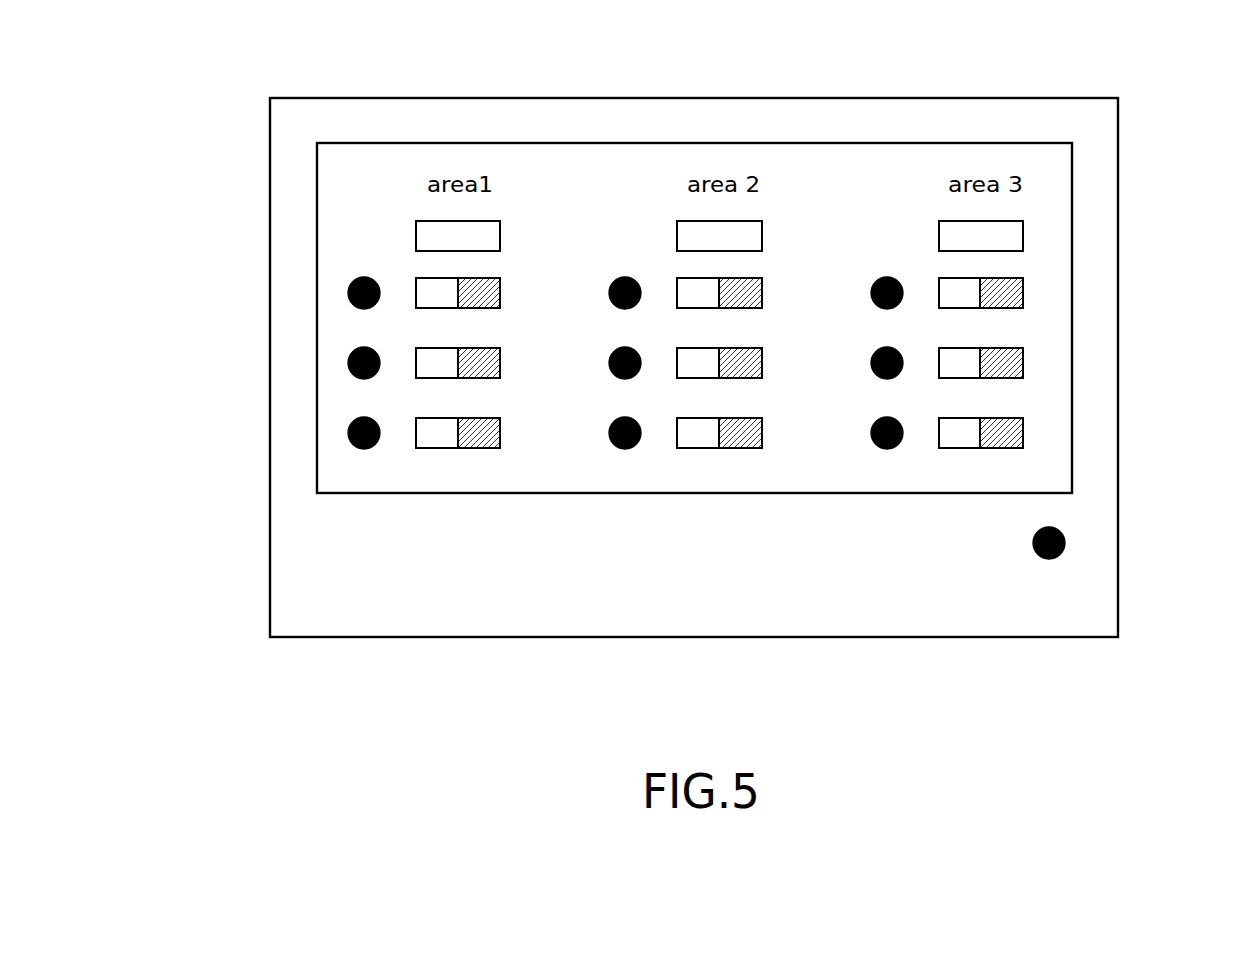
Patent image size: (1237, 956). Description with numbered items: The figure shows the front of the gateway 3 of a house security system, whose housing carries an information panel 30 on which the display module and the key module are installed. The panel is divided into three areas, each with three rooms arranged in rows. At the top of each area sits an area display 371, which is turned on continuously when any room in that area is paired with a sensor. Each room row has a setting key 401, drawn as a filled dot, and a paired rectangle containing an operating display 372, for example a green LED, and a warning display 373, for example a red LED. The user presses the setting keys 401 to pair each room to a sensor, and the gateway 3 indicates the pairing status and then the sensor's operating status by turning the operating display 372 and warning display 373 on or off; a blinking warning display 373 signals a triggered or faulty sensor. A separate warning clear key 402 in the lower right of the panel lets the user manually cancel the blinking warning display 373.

The gateway 3 is at (623, 113).
The information panel 30 is at (1078, 236).
The area display 371 is at (423, 239).
The operating display 372 is at (433, 443).
The warning display 373 is at (475, 445).
The setting key 401 is at (350, 432).
The warning clear key 402 is at (1065, 540).